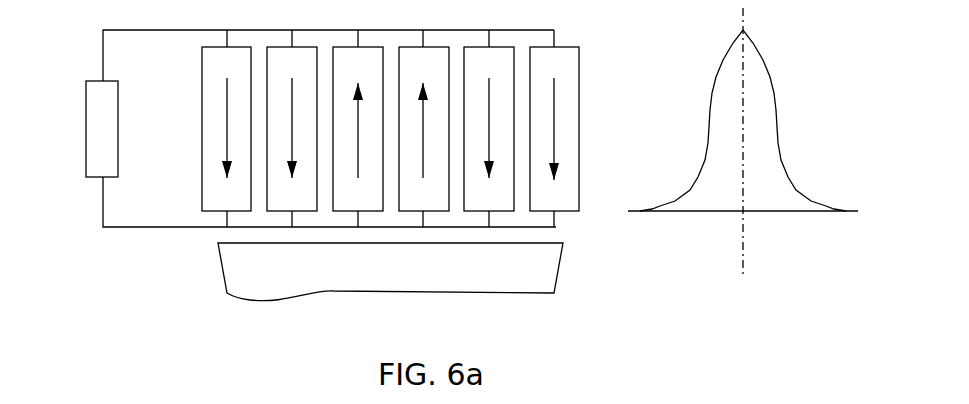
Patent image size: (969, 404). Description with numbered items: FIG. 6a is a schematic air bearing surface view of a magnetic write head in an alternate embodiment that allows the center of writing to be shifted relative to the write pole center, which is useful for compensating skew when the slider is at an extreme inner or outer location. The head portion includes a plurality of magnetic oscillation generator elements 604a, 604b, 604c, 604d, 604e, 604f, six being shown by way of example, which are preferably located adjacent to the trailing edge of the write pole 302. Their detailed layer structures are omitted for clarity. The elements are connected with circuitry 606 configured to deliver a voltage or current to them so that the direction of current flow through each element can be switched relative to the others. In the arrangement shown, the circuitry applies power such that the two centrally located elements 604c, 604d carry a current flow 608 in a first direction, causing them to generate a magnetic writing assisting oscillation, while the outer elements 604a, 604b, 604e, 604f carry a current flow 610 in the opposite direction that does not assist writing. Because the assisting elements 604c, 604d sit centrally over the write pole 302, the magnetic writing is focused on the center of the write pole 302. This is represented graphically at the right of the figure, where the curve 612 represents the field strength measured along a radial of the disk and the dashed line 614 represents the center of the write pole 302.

The write pole 302 is at (427, 270).
The magnetic oscillation generator element 604a is at (212, 55).
The magnetic oscillation generator element 604b is at (278, 53).
The magnetic oscillation generator element 604c is at (345, 53).
The magnetic oscillation generator element 604d is at (410, 53).
The magnetic oscillation generator element 604e is at (478, 53).
The magnetic oscillation generator element 604f is at (543, 53).
The circuitry 606 is at (90, 83).
The current flow 608 is at (358, 137).
The current flow 610 is at (227, 83).
The curve 612 is at (760, 43).
The dashed line 614 is at (745, 207).